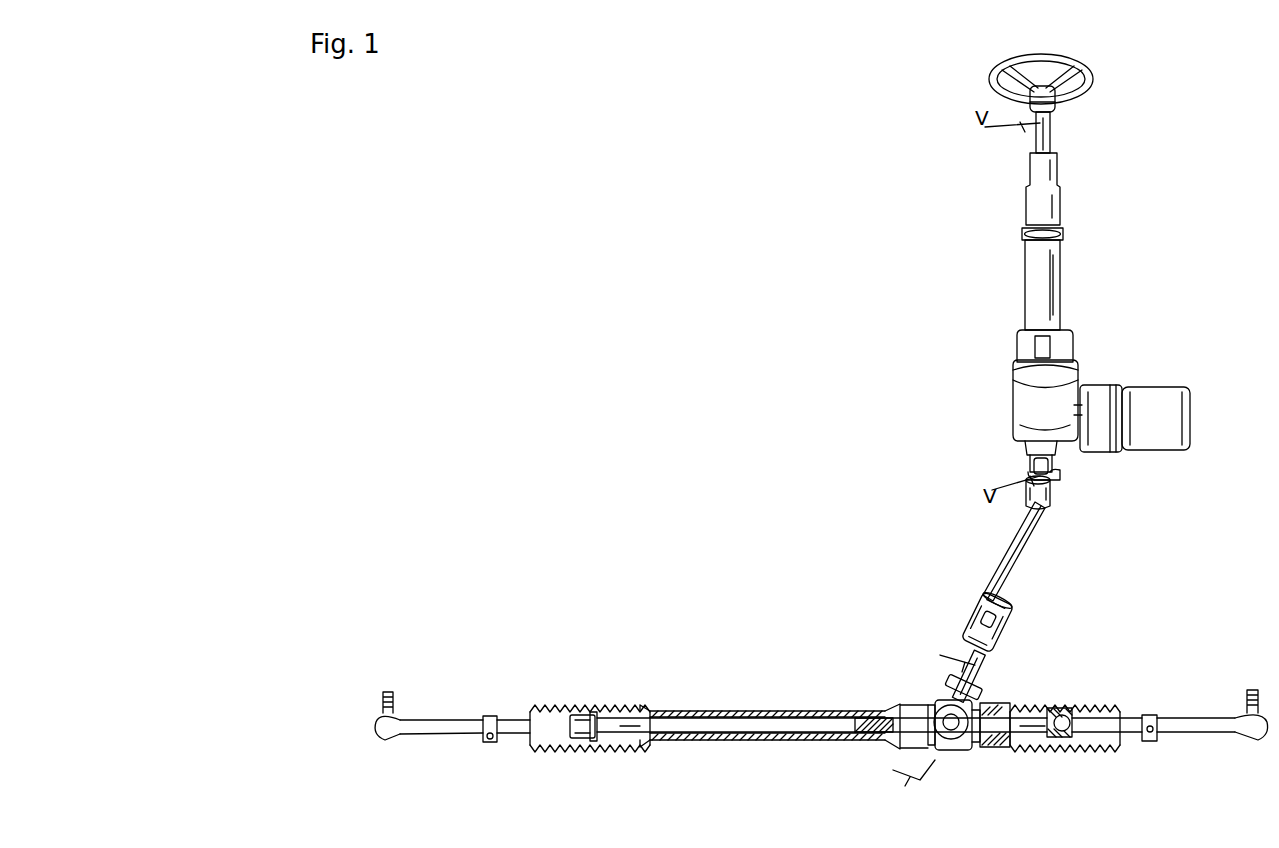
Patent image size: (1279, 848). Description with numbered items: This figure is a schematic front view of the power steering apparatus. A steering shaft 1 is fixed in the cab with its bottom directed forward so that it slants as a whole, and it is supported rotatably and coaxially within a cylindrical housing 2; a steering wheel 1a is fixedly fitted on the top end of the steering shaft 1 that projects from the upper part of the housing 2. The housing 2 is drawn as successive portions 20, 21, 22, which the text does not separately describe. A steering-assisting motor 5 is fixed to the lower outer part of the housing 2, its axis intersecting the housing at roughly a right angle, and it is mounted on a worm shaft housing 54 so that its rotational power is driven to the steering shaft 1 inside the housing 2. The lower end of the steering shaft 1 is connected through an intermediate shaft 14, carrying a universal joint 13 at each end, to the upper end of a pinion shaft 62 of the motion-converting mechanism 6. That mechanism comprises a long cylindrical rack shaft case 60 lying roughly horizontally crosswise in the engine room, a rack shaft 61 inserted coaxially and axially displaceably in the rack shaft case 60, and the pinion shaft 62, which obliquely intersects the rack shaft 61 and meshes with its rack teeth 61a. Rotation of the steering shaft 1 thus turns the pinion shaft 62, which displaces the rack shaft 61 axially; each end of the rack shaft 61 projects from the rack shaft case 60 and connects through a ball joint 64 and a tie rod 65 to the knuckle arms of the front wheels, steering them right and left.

The steering wheel 1a is at (1093, 78).
The steering shaft 1 is at (1048, 130).
The cylindrical housing 2 is at (1047, 304).
The upper column tube 20 is at (1030, 197).
The column tube 21 is at (1030, 288).
The gear housing of column 22 is at (1020, 400).
The steering-assisting motor 5 is at (1170, 395).
The worm shaft housing 54 is at (1108, 386).
The universal joint 13 is at (1072, 485).
The intermediate shaft 14 is at (1015, 548).
The motion-converting mechanism 6 is at (894, 660).
The pinion shaft 62 is at (988, 666).
The rack shaft case 60 is at (765, 711).
The rack shaft 61 is at (650, 722).
The rack teeth 61a is at (872, 718).
The ball joint 64 is at (582, 713).
The tie rod 65 is at (470, 720).